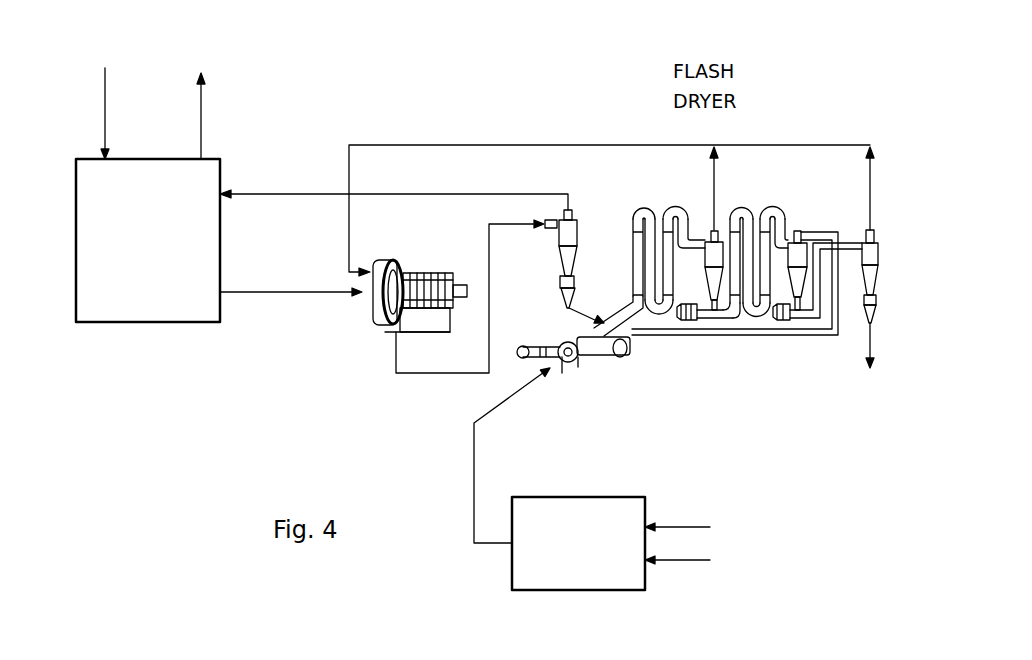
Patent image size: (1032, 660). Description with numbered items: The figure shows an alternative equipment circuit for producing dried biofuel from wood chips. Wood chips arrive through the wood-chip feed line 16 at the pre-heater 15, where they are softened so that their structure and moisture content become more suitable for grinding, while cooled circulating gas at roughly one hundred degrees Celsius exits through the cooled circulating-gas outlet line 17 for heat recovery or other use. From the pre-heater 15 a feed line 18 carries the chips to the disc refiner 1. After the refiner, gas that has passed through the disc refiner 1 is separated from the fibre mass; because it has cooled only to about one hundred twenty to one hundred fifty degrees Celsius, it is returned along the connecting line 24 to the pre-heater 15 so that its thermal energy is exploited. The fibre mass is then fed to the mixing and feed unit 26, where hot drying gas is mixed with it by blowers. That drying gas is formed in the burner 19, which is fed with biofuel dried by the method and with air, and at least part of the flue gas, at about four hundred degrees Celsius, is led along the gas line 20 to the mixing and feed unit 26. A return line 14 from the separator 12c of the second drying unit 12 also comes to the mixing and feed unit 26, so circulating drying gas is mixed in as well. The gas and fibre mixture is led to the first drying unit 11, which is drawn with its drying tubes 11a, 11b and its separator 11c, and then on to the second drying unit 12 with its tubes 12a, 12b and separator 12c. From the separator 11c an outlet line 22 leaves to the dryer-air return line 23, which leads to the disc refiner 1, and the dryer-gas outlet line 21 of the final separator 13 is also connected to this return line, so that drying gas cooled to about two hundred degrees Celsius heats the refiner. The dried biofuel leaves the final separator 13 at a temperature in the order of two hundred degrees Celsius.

The disc refiner 1 is at (396, 356).
The first drying unit 11 is at (656, 274).
The first drying tube of first flash dryer 11a is at (633, 250).
The second drying tube of first flash dryer 11b is at (667, 213).
The separator of the first drying unit 11c is at (713, 268).
The second drying unit 12 is at (778, 240).
The first drying tube of second flash dryer 12a is at (737, 230).
The second drying tube of second flash dryer 12b is at (777, 207).
The separator of the second drying unit 12c is at (800, 253).
The final separator 13 is at (875, 255).
The return line 14 is at (776, 337).
The pre-heater 15 is at (210, 158).
The wood-chip feed line 16 is at (105, 100).
The cooled circulating-gas outlet line 17 is at (202, 128).
The feed line 18 is at (325, 294).
The burner 19 is at (583, 496).
The gas line 20 is at (518, 395).
The dryer-gas outlet line 21 is at (873, 196).
The outlet line 22 is at (712, 198).
The dryer-air return line 23 is at (430, 144).
The connecting line 24 is at (285, 190).
The mixing and feed unit 26 is at (591, 357).